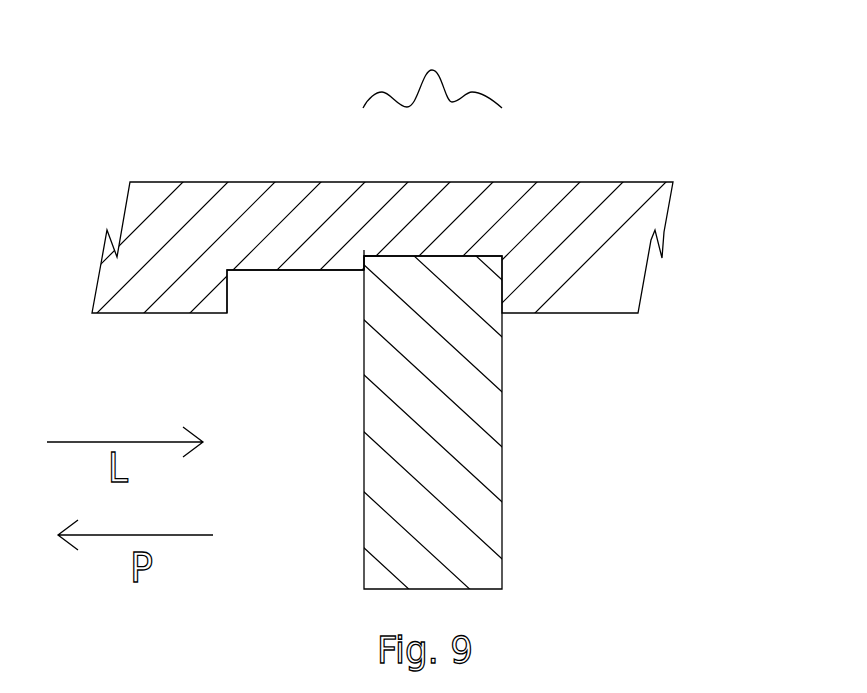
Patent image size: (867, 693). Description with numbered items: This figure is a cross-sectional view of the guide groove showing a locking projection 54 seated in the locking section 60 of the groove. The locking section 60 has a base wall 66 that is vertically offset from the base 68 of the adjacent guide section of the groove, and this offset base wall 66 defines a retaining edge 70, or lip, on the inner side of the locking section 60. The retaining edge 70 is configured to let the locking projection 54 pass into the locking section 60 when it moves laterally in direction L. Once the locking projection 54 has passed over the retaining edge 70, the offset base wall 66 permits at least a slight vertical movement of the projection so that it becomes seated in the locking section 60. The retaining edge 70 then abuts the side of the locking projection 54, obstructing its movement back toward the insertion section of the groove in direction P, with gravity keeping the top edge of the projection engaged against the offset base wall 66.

The locking projection 54 is at (364, 332).
The locking section 60 is at (432, 66).
The base wall 66 is at (438, 255).
The base 68 is at (297, 272).
The retaining edge 70 is at (365, 256).